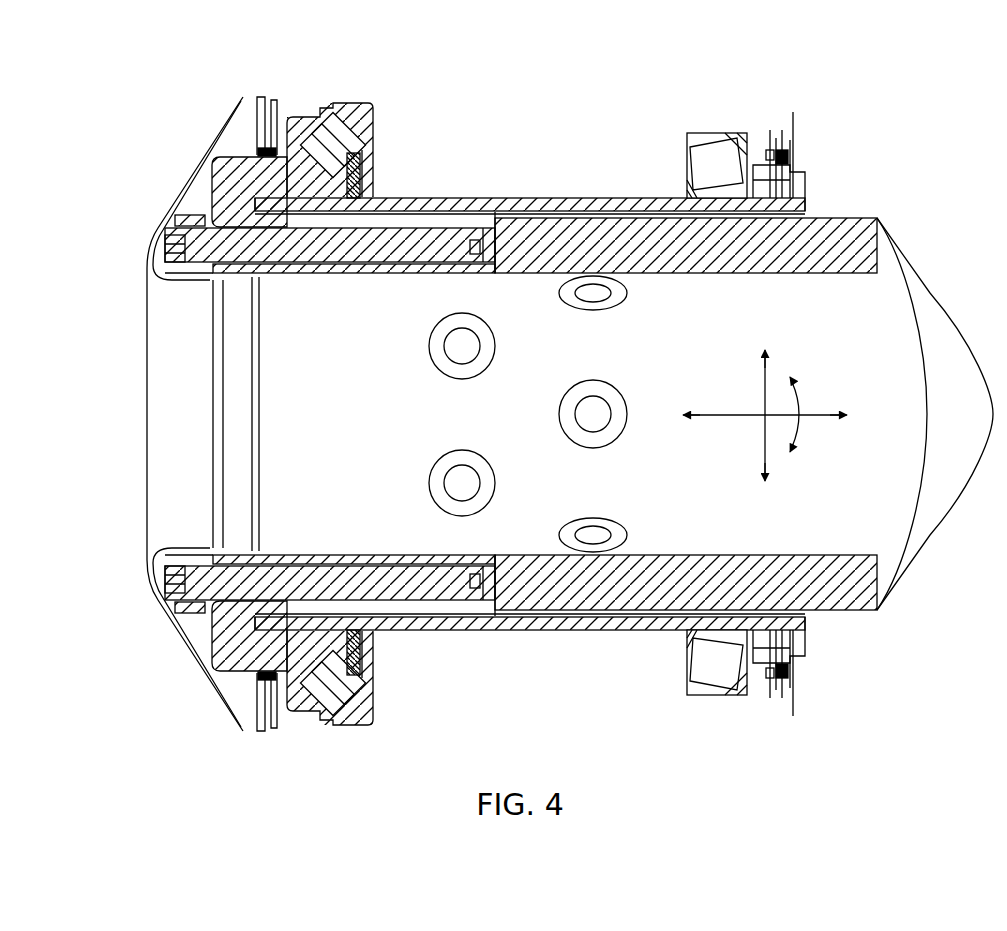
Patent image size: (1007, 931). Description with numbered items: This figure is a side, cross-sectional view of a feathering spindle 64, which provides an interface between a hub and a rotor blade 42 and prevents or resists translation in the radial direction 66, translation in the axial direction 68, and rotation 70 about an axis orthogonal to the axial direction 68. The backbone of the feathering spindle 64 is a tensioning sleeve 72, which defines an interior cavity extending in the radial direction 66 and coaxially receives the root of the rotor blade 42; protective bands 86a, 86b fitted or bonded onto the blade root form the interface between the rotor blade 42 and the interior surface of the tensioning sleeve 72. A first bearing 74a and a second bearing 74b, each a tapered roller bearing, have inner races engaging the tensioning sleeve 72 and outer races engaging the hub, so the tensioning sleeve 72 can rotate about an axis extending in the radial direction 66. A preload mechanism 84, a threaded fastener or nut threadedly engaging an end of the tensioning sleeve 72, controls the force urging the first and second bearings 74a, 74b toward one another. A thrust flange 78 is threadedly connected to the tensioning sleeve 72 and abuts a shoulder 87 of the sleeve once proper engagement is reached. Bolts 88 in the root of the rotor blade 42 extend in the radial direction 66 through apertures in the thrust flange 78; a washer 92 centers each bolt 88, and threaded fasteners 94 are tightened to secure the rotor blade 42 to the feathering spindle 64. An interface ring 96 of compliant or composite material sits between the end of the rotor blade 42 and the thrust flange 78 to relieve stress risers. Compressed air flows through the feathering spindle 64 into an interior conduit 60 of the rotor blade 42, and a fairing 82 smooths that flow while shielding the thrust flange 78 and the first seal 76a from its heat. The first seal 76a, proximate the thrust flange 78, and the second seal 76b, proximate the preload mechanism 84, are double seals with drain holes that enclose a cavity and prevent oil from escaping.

The rotor blade 42 is at (868, 222).
The interior conduit 60 is at (862, 493).
The feathering spindle 64 is at (759, 78).
The radial direction 66 is at (822, 408).
The axial direction 68 is at (762, 372).
The rotation 70 is at (800, 393).
The tensioning sleeve 72 is at (553, 198).
The first bearing 74a is at (367, 99).
The second bearing 74b is at (702, 129).
The first seal 76a is at (268, 88).
The second seal 76b is at (801, 133).
The thrust flange 78 is at (232, 160).
The fairing 82 is at (150, 505).
The preload mechanism 84 is at (809, 171).
The protective band 86a is at (399, 203).
The protective band 86b is at (676, 204).
The shoulder 87 is at (293, 188).
The bolt 88 is at (328, 255).
The washer 92 is at (175, 218).
The threaded fastener 94 is at (167, 240).
The interface ring 96 is at (264, 419).